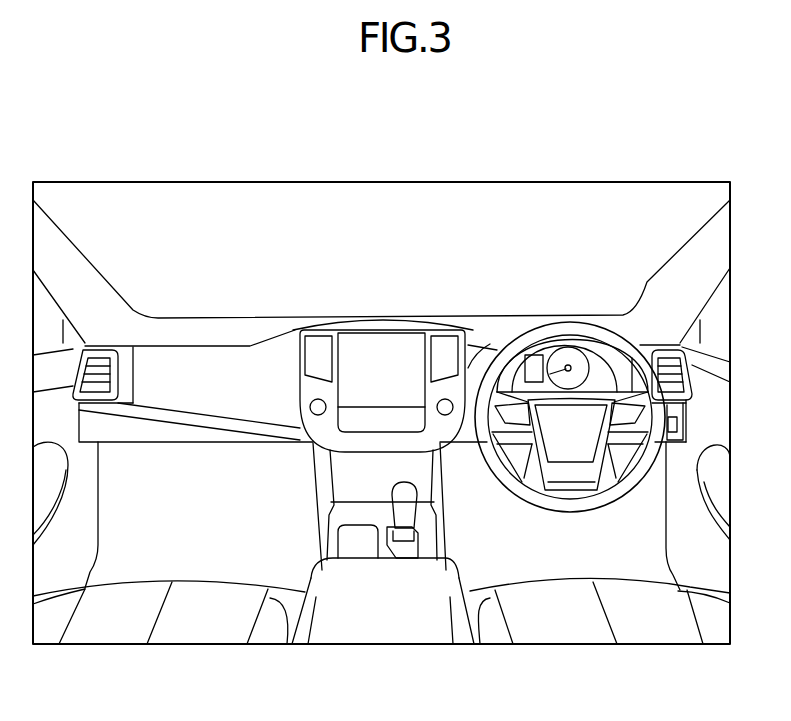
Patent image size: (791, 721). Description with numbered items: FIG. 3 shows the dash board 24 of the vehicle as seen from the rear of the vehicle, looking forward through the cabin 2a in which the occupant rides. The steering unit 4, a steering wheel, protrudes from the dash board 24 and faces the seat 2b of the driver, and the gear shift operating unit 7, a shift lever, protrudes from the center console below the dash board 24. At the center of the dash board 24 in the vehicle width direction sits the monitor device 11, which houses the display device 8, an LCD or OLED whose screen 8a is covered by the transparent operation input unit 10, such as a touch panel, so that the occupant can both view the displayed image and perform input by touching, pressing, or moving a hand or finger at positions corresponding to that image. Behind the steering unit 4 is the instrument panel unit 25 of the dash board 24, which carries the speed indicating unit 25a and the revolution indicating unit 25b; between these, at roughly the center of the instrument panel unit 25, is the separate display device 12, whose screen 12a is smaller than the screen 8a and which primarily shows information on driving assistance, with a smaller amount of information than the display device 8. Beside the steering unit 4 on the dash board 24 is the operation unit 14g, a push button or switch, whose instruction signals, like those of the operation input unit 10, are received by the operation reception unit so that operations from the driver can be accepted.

The cabin 2a is at (210, 200).
The seat 2b is at (562, 633).
The dash board 24 is at (288, 320).
The monitor device 11 is at (375, 322).
The screen 8a is at (405, 347).
The display device 8 is at (400, 265).
The operation input unit 10 is at (400, 265).
The screen 12a is at (528, 355).
The display device 12 is at (513, 241).
The speed indicating unit 25a is at (485, 350).
The instrument panel unit 25 is at (548, 350).
The revolution indicating unit 25b is at (569, 364).
The steering unit 4 is at (597, 326).
The operation unit 14g is at (677, 425).
The gear shift operating unit 7 is at (403, 515).